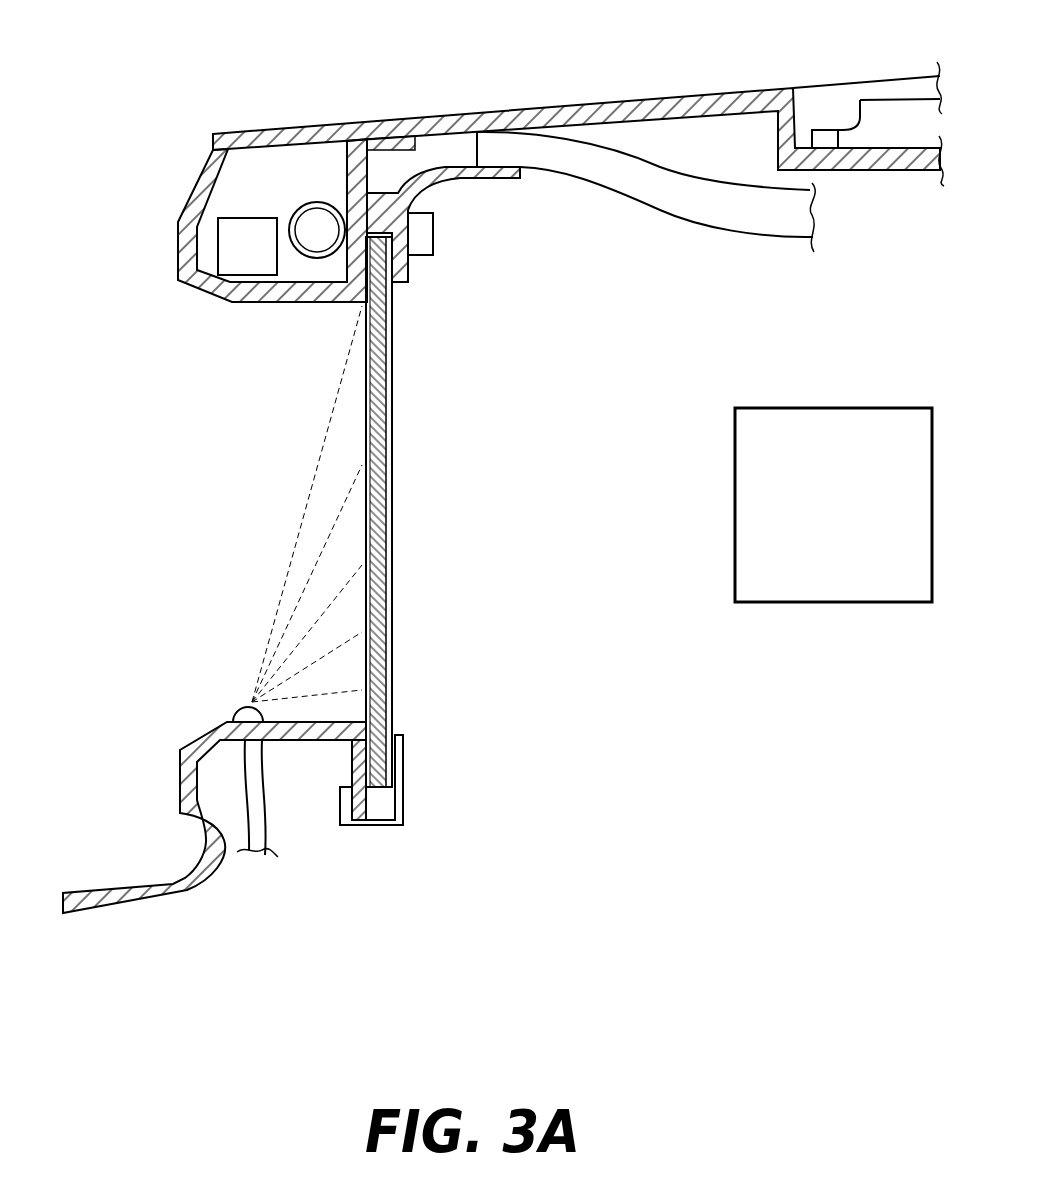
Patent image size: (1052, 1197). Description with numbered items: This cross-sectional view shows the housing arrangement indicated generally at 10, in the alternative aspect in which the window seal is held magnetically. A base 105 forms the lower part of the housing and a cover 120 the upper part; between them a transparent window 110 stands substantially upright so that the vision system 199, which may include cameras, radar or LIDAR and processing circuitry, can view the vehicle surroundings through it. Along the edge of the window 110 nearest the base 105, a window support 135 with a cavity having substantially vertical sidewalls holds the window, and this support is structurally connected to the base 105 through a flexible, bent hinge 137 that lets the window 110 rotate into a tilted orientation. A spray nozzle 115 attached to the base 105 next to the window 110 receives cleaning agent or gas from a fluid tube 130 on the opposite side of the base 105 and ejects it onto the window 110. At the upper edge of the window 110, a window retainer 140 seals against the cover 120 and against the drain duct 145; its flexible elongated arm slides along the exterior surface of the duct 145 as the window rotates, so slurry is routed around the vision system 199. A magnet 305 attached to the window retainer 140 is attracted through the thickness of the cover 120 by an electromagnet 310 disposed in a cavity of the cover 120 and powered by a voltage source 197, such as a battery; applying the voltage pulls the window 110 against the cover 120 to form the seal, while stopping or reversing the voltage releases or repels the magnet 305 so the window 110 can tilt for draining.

The vehicle illumination and sensing assembly 10 is at (112, 58).
The base 105 is at (107, 885).
The window 110 is at (388, 400).
The spray nozzle 115 is at (240, 704).
The cover 120 is at (313, 128).
The fluid tube 130 is at (263, 812).
The window support 135 is at (403, 825).
The hinge 137 is at (363, 737).
The window retainer 140 is at (473, 181).
The drain duct 145 is at (685, 222).
The voltage source 197 is at (247, 246).
The vision system 199 is at (833, 505).
The magnet 305 is at (433, 233).
The electromagnet 310 is at (274, 222).